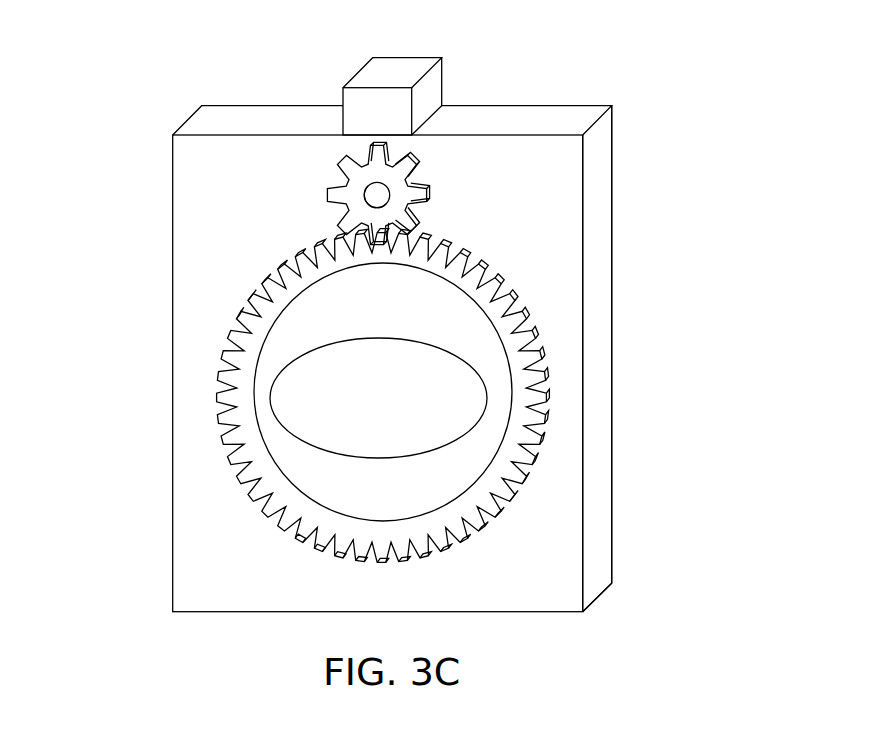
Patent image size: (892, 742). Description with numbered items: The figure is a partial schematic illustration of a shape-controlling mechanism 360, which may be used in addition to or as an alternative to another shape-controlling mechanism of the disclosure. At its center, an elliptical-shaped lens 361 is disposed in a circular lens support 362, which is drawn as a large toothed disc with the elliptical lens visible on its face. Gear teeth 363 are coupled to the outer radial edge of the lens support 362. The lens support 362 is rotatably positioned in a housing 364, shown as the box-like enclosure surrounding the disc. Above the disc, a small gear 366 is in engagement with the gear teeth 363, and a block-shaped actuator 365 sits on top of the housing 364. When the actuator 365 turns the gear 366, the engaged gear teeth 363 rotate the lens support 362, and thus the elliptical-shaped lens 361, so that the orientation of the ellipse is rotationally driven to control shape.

The shape-controlling mechanism 360 is at (599, 58).
The elliptical-shaped lens 361 is at (285, 402).
The circular lens support 362 is at (453, 328).
The gear teeth 363 is at (463, 255).
The housing 364 is at (596, 218).
The actuator 365 is at (435, 89).
The gear 366 is at (428, 187).